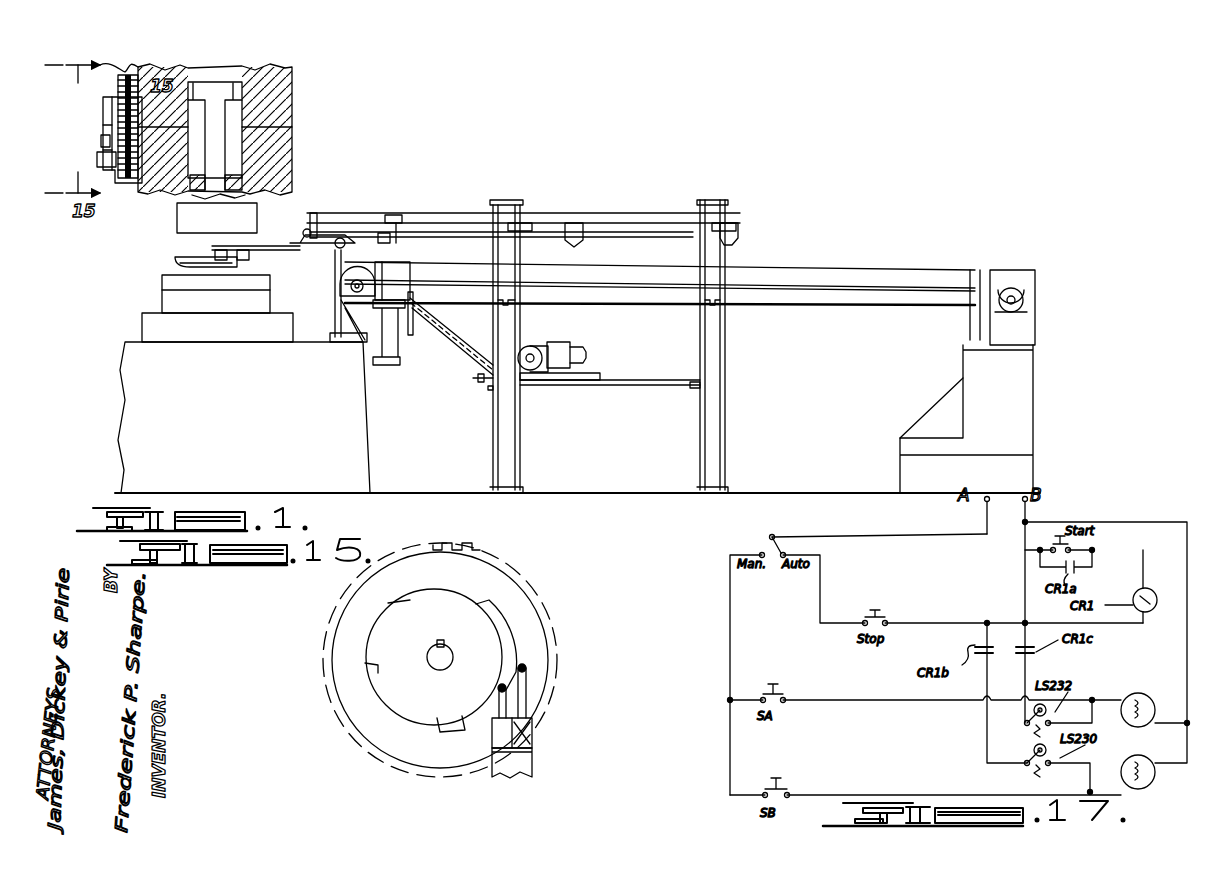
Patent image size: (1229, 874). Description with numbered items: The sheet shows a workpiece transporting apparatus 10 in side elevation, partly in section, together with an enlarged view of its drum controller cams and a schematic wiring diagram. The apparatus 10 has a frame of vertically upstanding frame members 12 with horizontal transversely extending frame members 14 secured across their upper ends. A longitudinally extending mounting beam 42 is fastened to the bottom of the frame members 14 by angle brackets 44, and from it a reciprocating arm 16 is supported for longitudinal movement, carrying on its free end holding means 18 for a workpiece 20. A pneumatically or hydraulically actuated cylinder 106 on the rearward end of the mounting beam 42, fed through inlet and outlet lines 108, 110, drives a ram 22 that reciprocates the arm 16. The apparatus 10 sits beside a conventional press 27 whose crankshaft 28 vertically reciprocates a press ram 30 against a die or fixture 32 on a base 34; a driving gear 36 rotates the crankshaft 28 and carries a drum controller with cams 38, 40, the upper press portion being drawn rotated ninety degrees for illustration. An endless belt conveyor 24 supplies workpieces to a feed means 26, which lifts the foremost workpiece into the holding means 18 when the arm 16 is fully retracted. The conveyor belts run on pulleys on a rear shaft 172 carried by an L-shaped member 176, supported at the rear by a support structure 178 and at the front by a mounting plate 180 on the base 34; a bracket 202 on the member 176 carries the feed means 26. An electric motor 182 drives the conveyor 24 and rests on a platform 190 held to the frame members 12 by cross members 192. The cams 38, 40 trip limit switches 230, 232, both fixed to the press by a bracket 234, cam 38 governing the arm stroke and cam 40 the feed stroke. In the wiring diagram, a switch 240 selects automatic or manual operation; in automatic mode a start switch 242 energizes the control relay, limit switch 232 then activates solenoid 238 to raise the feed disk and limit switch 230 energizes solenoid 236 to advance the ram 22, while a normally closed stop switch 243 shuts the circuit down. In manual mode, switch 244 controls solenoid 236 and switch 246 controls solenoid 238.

In FIG. 1, the transporting apparatus 10 is at (637, 172).
In FIG. 1, the vertically upstanding frame members 12 is at (510, 458).
In FIG. 1, the horizontal transversely extending frame members 14 is at (497, 205).
In FIG. 1, the reciprocating arm 16 is at (280, 247).
In FIG. 1, the holding means 18 is at (256, 244).
In FIG. 1, the workpiece 20 is at (180, 260).
In FIG. 1, the ram 22 is at (540, 228).
In FIG. 1, the endless belt conveyor 24 is at (630, 307).
In FIG. 1, the feed means 26 is at (406, 350).
In FIG. 1, the press 27 is at (312, 152).
In FIG. 1, the crankshaft 28 is at (280, 122).
In FIG. 15, the crankshaft 28 is at (452, 648).
In FIG. 1, the ram 30 is at (228, 228).
In FIG. 1, the die or fixture 32 is at (167, 280).
In FIG. 1, the base 34 is at (137, 370).
In FIG. 1, the driving gear 36 is at (118, 83).
In FIG. 15, the driving gear 36 is at (480, 548).
In FIG. 1, the cam 38 is at (115, 107).
In FIG. 15, the cam 38 is at (500, 613).
In FIG. 1, the cam 40 is at (108, 118).
In FIG. 15, the cam 40 is at (383, 633).
In FIG. 1, the mounting beam 42 is at (420, 215).
In FIG. 1, the angle brackets 44 is at (533, 211).
In FIG. 1, the cylinder 106 is at (640, 238).
In FIG. 1, the inlet and outlet line 108 is at (576, 246).
In FIG. 1, the inlet and outlet line 110 is at (735, 245).
In FIG. 1, the shaft 172 is at (1013, 297).
In FIG. 1, the L-shaped member 176 is at (847, 272).
In FIG. 1, the support structure 178 is at (977, 365).
In FIG. 1, the mounting plate 180 is at (335, 288).
In FIG. 1, the electric motor 182 is at (550, 347).
In FIG. 1, the platform 190 is at (560, 385).
In FIG. 1, the cross members 192 is at (490, 390).
In FIG. 1, the bracket 202 is at (390, 276).
In FIG. 1, the limit switch 230 is at (103, 147).
In FIG. 15, the limit switch 230 is at (520, 738).
In FIG. 1, the limit switch 232 is at (100, 158).
In FIG. 15, the limit switch 232 is at (497, 730).
In FIG. 1, the bracket 234 is at (130, 193).
In FIG. 15, the bracket 234 is at (530, 765).
In FIG. 17, the solenoid 236 is at (1146, 787).
In FIG. 17, the solenoid 238 is at (1157, 698).
In FIG. 17, the switch 240 is at (762, 541).
In FIG. 17, the start switch 242 is at (1098, 545).
In FIG. 17, the stop switch 243 is at (888, 616).
In FIG. 17, the manually operable switch 244 is at (789, 787).
In FIG. 17, the manually operable switch 246 is at (790, 691).